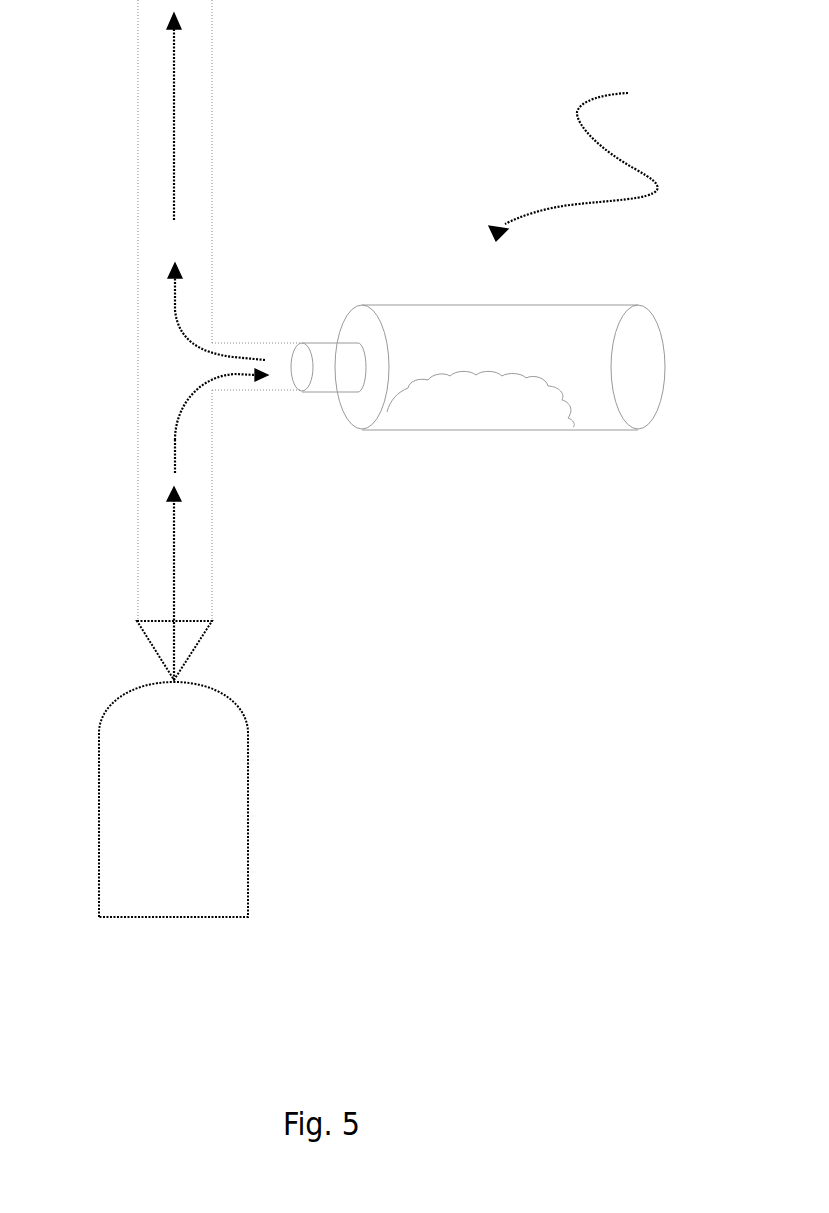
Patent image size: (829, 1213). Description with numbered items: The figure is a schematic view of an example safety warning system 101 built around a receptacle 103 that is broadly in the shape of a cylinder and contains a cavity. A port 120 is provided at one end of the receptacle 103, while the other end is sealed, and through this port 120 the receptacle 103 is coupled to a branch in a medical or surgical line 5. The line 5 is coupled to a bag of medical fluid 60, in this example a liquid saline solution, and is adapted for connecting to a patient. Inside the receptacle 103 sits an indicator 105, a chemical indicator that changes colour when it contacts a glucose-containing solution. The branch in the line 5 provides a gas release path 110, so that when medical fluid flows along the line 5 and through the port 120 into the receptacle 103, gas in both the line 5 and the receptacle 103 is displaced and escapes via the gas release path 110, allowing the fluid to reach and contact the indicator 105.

The medical or surgical line 5 is at (182, 572).
The bag of medical fluid 60 is at (250, 792).
The safety warning system 101 is at (594, 152).
The receptacle 103 is at (465, 305).
The indicator 105 is at (477, 423).
The gas release path 110 is at (206, 340).
The port 120 is at (380, 407).